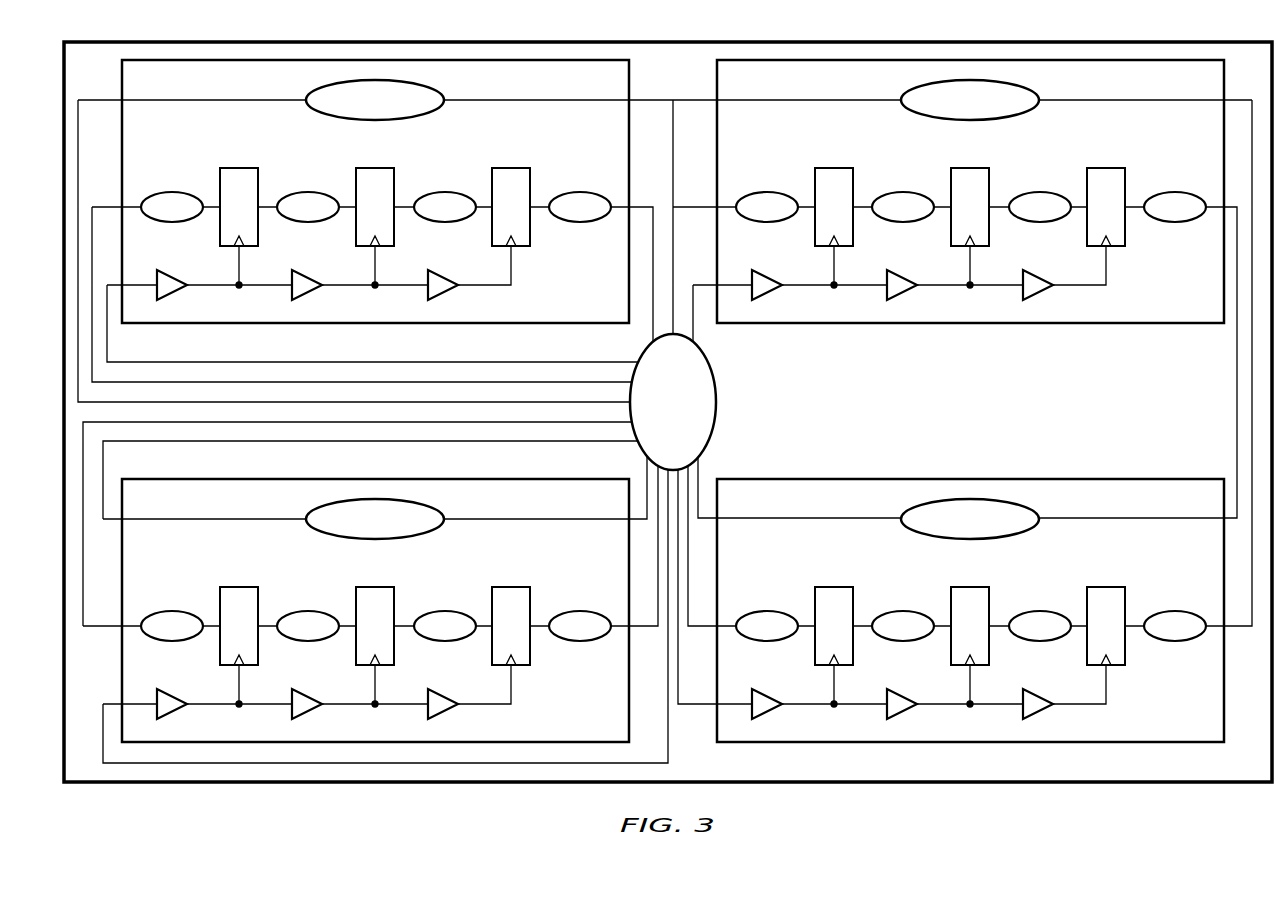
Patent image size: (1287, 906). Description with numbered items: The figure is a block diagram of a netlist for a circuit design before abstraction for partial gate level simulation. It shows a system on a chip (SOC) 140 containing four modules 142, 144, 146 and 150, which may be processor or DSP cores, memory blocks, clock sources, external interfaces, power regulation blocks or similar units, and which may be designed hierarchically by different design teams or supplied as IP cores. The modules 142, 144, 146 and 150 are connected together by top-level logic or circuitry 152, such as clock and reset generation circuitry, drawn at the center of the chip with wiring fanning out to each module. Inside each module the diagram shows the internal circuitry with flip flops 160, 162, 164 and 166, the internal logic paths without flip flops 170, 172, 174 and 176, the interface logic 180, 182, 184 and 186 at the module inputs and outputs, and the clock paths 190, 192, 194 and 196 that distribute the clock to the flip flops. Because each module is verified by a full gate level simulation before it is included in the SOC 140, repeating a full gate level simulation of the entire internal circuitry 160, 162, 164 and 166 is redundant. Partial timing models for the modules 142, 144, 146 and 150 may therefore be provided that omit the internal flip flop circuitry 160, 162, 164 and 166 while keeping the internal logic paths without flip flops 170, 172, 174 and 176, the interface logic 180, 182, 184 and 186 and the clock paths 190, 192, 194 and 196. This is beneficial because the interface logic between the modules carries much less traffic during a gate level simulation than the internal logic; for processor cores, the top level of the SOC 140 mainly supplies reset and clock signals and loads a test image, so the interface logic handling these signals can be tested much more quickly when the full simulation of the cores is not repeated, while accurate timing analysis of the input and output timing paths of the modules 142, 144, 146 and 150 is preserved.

The system on a chip 140 is at (410, 786).
The module 142 is at (634, 79).
The module 144 is at (990, 329).
The module 146 is at (361, 477).
The module 150 is at (1004, 476).
The top-level logic or circuitry 152 is at (718, 396).
The internal circuitry with flip flops 160 is at (456, 169).
The internal circuitry with flip flops 162 is at (890, 169).
The internal circuitry with flip flops 164 is at (456, 588).
The internal circuitry with flip flops 166 is at (1050, 588).
The internal logic path without flip flops 170 is at (346, 118).
The internal logic path without flip flops 172 is at (993, 118).
The internal logic path without flip flops 174 is at (346, 537).
The internal logic path without flip flops 176 is at (938, 537).
The interface logic 180 is at (170, 164).
The interface logic 182 is at (764, 164).
The interface logic 184 is at (170, 583).
The interface logic 186 is at (764, 583).
The clock path 190 is at (527, 286).
The clock path 192 is at (1122, 286).
The clock path 194 is at (527, 705).
The clock path 196 is at (1122, 705).